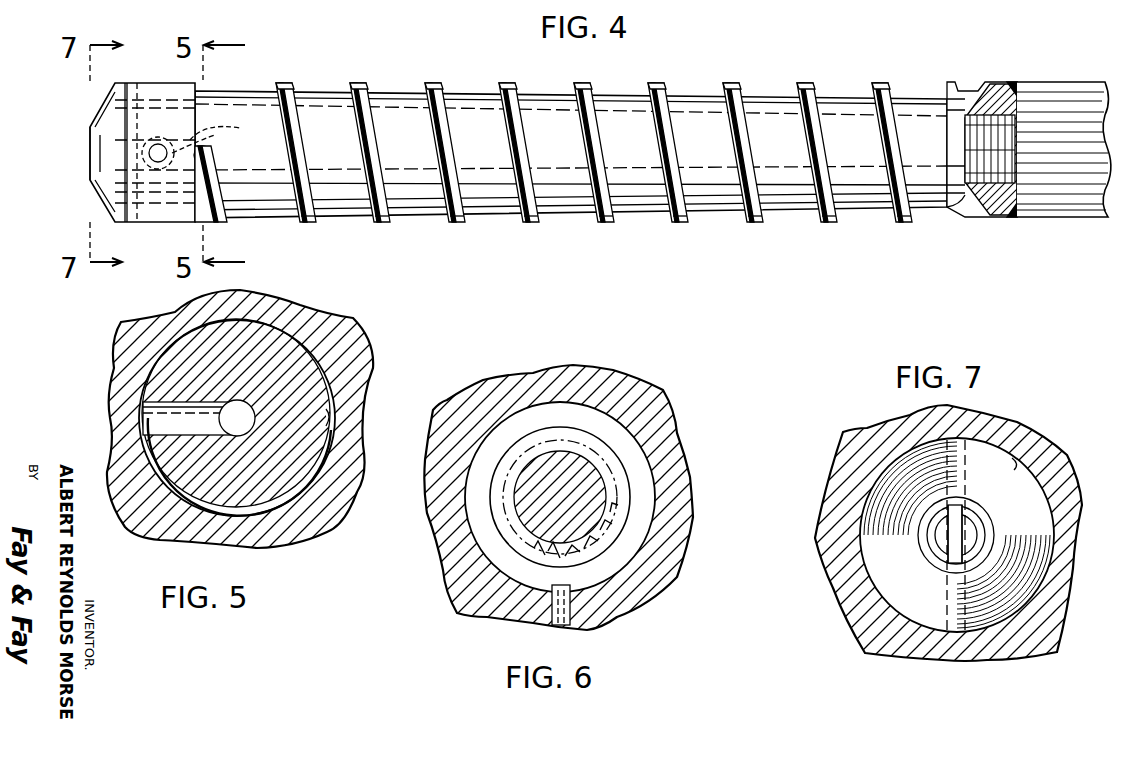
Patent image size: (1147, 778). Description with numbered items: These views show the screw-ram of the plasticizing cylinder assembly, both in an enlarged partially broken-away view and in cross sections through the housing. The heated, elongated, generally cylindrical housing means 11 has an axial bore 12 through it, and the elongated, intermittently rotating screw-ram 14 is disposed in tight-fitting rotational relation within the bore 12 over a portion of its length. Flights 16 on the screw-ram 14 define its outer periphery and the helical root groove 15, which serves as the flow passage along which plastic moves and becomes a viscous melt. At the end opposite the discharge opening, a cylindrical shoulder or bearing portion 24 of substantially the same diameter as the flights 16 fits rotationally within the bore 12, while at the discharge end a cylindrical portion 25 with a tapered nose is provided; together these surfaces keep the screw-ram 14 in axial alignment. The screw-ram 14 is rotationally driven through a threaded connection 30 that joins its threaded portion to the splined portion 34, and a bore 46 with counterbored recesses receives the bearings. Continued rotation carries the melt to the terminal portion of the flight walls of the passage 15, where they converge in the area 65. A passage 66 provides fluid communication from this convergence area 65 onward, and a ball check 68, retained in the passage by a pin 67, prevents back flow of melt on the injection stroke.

In FIG. 5, the housing means 11 is at (378, 375).
In FIG. 6, the housing means 11 is at (672, 382).
In FIG. 7, the housing means 11 is at (848, 625).
In FIG. 5, the axial bore 12 is at (328, 420).
In FIG. 6, the axial bore 12 is at (640, 450).
In FIG. 7, the axial bore 12 is at (1016, 464).
In FIG. 4, the screw-ram 14 is at (322, 93).
In FIG. 5, the screw-ram 14 is at (320, 345).
In FIG. 7, the screw-ram 14 is at (862, 518).
In FIG. 4, the helical root groove 15 is at (477, 246).
In FIG. 5, the helical root groove 15 is at (328, 470).
In FIG. 4, the flights 16 is at (508, 82).
In FIG. 4, the bearing portion 24 is at (985, 218).
In FIG. 4, the cylindrical portion 25 is at (150, 220).
In FIG. 5, the cylindrical portion 25 is at (305, 510).
In FIG. 7, the cylindrical portion 25 is at (1055, 500).
In FIG. 4, the threaded connection 30 is at (962, 207).
In FIG. 6, the threaded connection 30 is at (525, 527).
In FIG. 4, the splined portion 34 is at (1040, 225).
In FIG. 6, the splined portion 34 is at (630, 530).
In FIG. 6, the bore 46 is at (622, 502).
In FIG. 4, the passage wall convergence 65 is at (210, 185).
In FIG. 5, the passage wall convergence 65 is at (182, 500).
In FIG. 4, the passage 66 is at (208, 152).
In FIG. 5, the passage 66 is at (175, 420).
In FIG. 4, the pin 67 is at (100, 104).
In FIG. 4, the ball check 68 is at (158, 137).